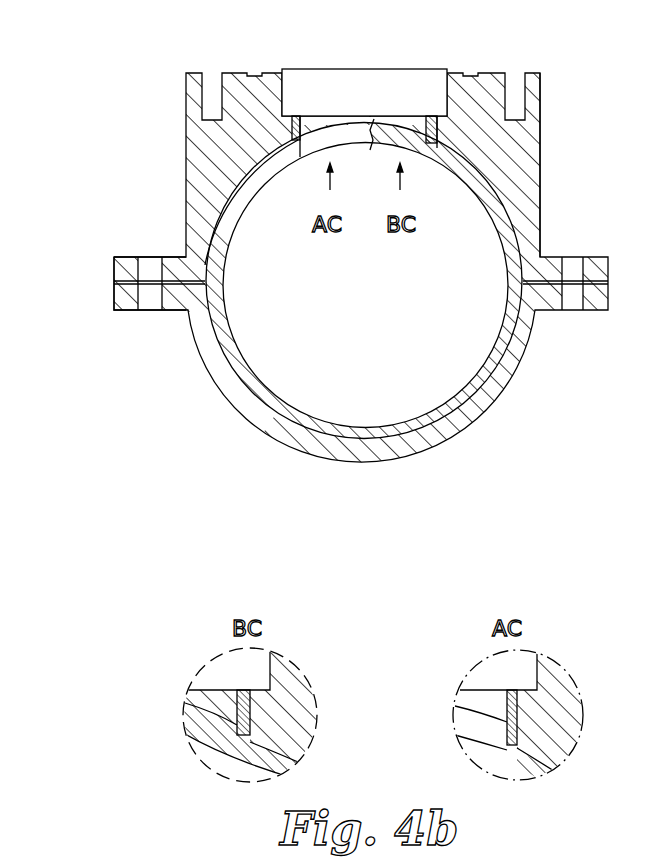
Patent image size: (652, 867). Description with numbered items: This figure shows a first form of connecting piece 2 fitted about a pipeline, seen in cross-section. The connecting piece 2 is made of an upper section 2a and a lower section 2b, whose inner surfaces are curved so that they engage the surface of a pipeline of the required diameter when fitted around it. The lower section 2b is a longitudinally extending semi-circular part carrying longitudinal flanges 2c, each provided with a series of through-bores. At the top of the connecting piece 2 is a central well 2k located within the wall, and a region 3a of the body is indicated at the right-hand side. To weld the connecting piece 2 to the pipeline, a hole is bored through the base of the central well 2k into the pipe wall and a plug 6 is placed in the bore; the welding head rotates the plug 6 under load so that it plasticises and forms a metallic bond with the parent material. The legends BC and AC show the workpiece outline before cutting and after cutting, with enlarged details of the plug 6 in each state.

The connecting piece 2 is at (545, 115).
The upper section 2a is at (132, 265).
The lower section 2b is at (467, 415).
The longitudinal flanges 2c is at (128, 302).
The central well 2k is at (386, 92).
The body side wall 3a is at (528, 190).
The plug 6 is at (294, 124).